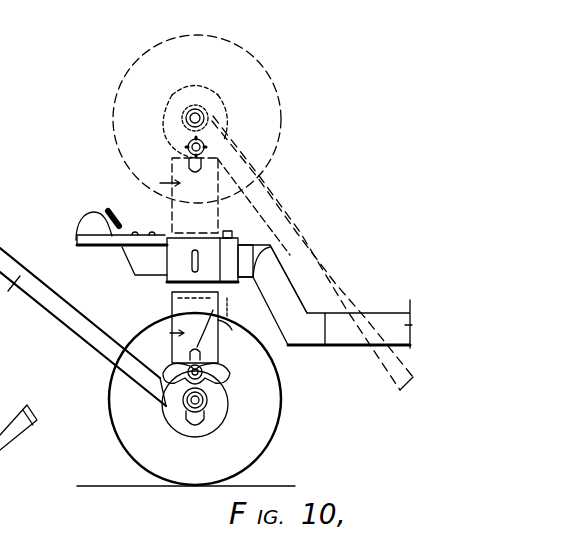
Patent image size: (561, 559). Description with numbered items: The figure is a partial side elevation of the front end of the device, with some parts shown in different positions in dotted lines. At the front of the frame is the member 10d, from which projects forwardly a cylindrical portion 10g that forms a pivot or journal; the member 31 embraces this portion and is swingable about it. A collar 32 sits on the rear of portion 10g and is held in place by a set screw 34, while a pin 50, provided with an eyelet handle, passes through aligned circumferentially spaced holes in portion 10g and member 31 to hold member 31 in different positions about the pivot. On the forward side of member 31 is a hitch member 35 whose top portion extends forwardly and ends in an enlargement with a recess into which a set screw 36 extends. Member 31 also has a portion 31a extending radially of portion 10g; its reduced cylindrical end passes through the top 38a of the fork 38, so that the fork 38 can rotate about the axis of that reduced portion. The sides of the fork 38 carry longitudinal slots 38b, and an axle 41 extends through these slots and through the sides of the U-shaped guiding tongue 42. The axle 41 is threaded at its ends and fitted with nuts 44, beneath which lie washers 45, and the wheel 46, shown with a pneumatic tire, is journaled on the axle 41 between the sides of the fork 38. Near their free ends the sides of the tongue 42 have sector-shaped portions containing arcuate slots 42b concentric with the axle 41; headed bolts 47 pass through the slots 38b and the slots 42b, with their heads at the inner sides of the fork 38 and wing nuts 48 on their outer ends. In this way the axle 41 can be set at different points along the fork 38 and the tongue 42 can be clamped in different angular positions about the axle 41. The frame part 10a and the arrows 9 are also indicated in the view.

The wheel 46 is at (256, 88).
The guiding tongue 42 is at (278, 198).
The fork 38 is at (165, 160).
The set screw 34 is at (228, 231).
The direction arrow 9 is at (167, 262).
The member 31 is at (212, 252).
The pin 50 is at (191, 255).
The hitch member 35 is at (77, 238).
The set screw 36 is at (107, 214).
The cylindrical portion 10g is at (253, 250).
The frame member 10d is at (285, 278).
The frame bottom member 10a is at (333, 347).
The collar 32 is at (230, 302).
The radial portion 31a is at (174, 294).
The slots 38b is at (195, 339).
The top of fork 38a is at (232, 330).
The wing nuts 48 is at (218, 370).
The axle member 41 is at (180, 402).
The nuts 44 is at (200, 404).
The arcuate slots 42b is at (218, 400).
The headed bolts 47 is at (163, 397).
The washers 45 is at (140, 412).